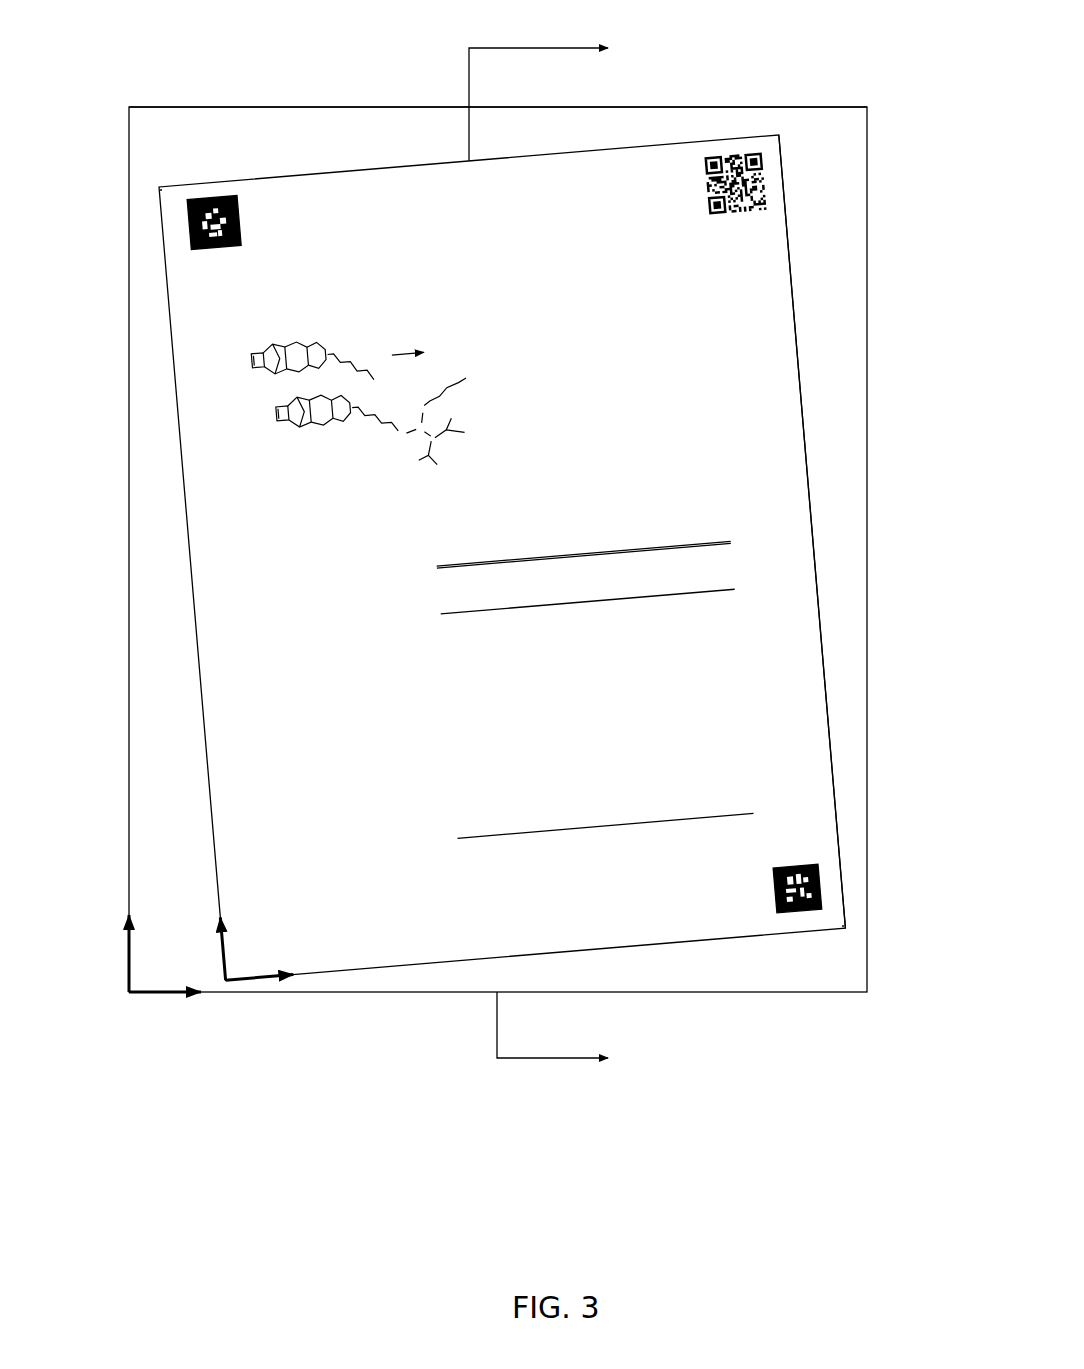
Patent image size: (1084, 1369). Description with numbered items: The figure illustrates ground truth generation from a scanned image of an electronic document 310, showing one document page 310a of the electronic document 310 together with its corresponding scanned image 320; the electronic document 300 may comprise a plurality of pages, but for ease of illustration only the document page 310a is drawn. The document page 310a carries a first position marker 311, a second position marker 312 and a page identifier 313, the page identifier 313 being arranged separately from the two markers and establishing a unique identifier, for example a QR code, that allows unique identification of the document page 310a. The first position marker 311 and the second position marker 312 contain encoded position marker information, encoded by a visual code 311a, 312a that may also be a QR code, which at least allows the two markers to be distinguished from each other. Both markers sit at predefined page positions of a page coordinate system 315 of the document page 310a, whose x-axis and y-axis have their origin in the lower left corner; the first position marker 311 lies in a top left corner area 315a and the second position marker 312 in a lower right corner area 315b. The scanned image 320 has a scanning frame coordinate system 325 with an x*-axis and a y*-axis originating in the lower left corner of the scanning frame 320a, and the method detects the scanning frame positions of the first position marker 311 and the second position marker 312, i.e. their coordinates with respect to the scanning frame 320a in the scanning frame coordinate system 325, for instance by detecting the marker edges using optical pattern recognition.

The electronic document 300 is at (960, 1134).
The electronic document 310 is at (149, 183).
The document page 310a is at (812, 531).
The first position marker 311 is at (214, 223).
The visual code 311a is at (214, 223).
The second position marker 312 is at (797, 888).
The visual code 312a is at (798, 887).
The page identifier 313 is at (735, 183).
The page coordinate system 315 is at (256, 946).
The top left corner area 315a is at (175, 238).
The lower right corner area 315b is at (745, 925).
The scanned image 320 is at (117, 102).
The scanning frame 320a is at (290, 107).
The scanning frame coordinate system 325 is at (129, 992).